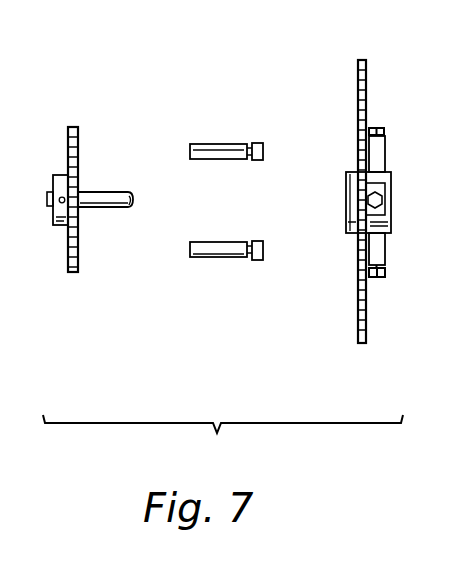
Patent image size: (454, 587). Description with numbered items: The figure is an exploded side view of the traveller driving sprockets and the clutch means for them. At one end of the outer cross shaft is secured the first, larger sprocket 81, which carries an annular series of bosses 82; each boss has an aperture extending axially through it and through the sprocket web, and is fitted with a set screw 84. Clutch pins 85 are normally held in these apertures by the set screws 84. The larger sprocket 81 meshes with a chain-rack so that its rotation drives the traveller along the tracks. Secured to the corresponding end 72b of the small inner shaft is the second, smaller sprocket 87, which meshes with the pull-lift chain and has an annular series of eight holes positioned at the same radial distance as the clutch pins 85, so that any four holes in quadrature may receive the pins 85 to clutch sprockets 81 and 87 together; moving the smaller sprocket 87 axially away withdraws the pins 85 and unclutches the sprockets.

The second, smaller sprocket 87 is at (72, 125).
The end of the small inner shaft 72b is at (50, 208).
The clutch pins 85 is at (220, 245).
The first, larger sprocket 81 is at (383, 82).
The set screws 84 is at (378, 127).
The bosses 82 is at (380, 152).